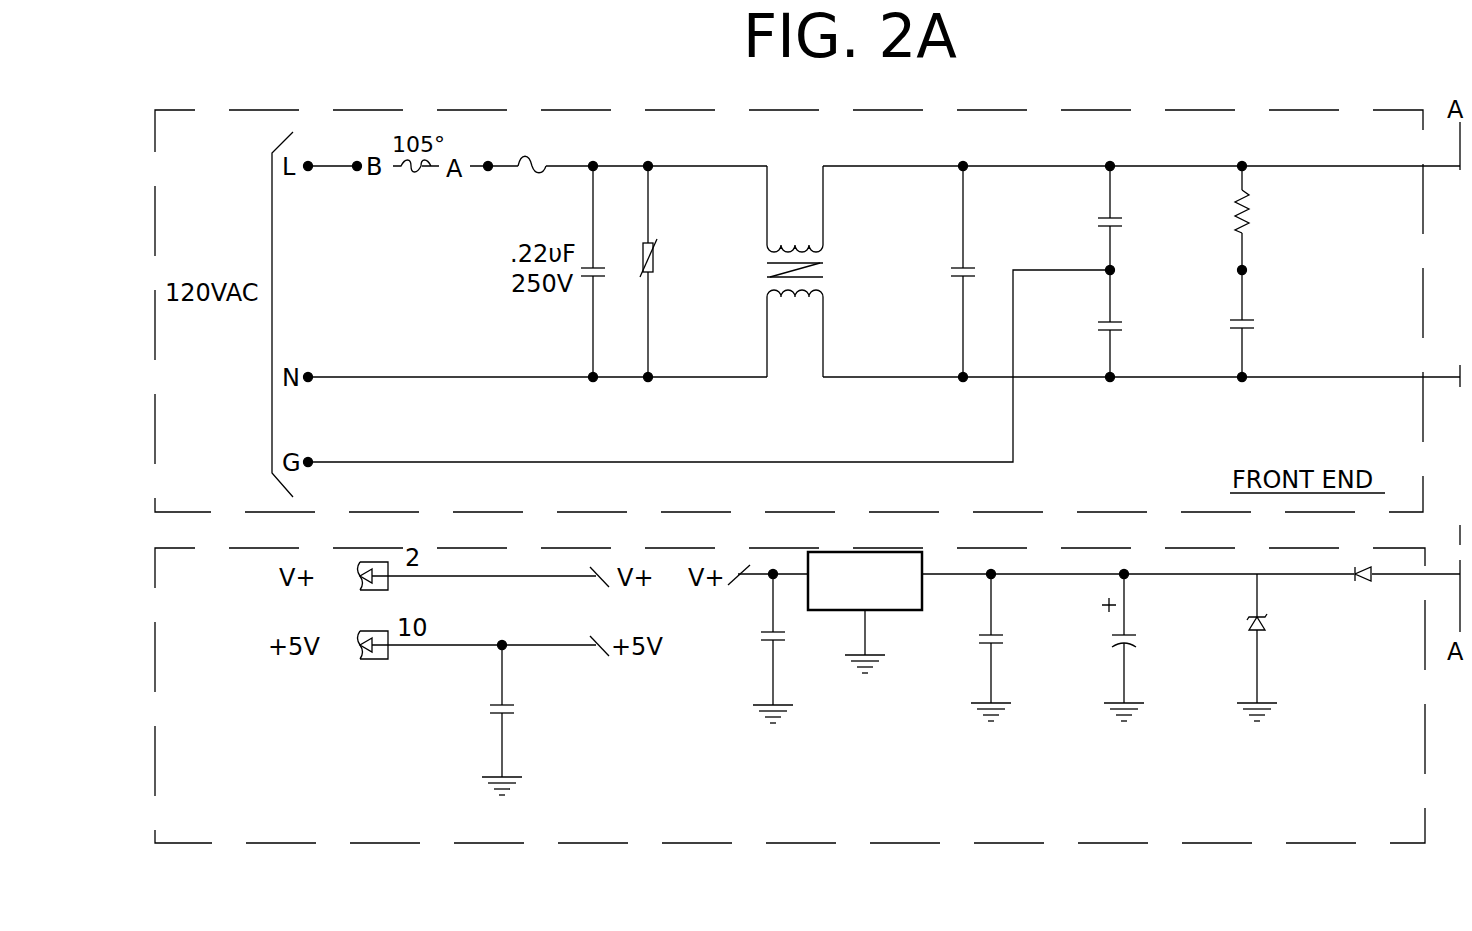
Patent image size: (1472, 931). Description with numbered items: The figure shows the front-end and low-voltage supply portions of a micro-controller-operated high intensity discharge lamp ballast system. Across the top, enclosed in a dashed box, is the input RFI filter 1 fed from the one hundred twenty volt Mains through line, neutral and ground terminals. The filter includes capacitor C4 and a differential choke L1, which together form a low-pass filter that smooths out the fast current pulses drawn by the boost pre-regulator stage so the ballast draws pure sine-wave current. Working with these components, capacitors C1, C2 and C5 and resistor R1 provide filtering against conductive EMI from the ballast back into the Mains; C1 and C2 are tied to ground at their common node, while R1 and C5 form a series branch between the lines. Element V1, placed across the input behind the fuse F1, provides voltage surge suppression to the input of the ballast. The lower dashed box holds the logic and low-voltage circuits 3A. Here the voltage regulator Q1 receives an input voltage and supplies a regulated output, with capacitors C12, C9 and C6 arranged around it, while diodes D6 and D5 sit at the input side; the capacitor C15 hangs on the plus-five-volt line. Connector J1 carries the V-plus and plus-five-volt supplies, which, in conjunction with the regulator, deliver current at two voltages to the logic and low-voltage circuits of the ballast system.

The input RFI filter 1 is at (394, 108).
The logic and low-voltage circuits 3A is at (371, 848).
The fuse F1 is at (535, 168).
The element V1 is at (682, 271).
The differential choke L1 is at (794, 306).
The capacitor C4 is at (926, 271).
The capacitor C1 is at (1091, 218).
The capacitor C2 is at (1090, 323).
The resistor R1 is at (1272, 218).
The capacitor C5 is at (1227, 323).
The connector J1 is at (356, 611).
The capacitor C15 is at (477, 720).
The capacitor C12 is at (749, 648).
The voltage regulator Q1 is at (879, 596).
The capacitor C9 is at (1015, 647).
The electrolytic capacitor C6 is at (1155, 647).
The zener diode D5 is at (1303, 647).
The diode D6 is at (1368, 570).